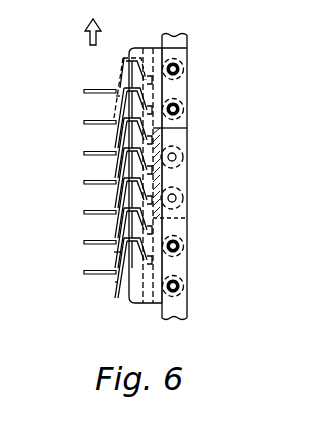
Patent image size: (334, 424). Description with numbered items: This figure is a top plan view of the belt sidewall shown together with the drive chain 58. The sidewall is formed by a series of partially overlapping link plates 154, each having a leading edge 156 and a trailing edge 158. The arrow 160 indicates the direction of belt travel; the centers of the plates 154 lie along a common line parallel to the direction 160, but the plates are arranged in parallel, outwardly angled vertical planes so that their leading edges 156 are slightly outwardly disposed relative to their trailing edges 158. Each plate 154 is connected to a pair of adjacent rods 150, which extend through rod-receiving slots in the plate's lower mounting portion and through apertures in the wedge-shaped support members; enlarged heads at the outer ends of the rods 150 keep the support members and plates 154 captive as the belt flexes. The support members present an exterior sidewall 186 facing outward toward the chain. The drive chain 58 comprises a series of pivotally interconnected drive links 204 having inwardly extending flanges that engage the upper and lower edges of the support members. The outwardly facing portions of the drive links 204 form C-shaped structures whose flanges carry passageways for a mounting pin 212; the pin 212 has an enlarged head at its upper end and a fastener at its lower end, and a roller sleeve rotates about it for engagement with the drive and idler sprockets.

The drive chain 58 is at (194, 91).
The rods 150 is at (90, 208).
The link plates 154 is at (116, 254).
The leading edge 156 is at (128, 58).
The trailing edge 158 is at (116, 100).
The direction of belt travel 160 is at (88, 48).
The exterior sidewall 186 is at (118, 281).
The drive links 204 is at (184, 118).
The mounting pin 212 is at (177, 157).